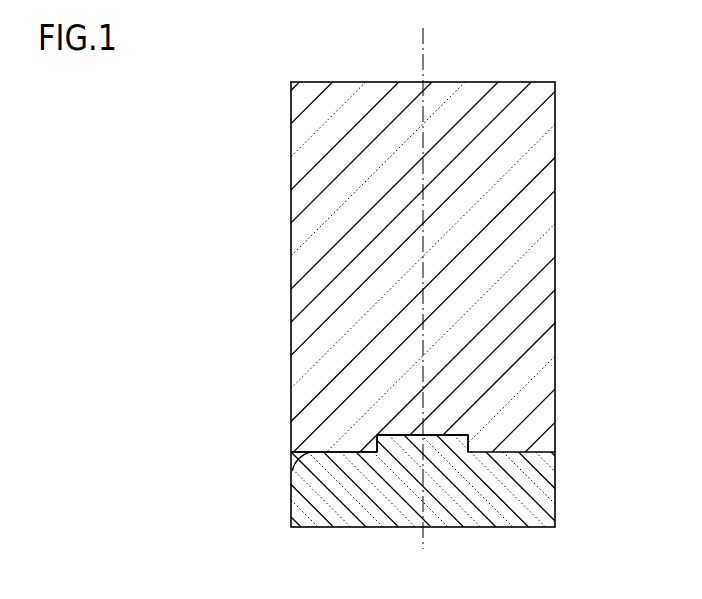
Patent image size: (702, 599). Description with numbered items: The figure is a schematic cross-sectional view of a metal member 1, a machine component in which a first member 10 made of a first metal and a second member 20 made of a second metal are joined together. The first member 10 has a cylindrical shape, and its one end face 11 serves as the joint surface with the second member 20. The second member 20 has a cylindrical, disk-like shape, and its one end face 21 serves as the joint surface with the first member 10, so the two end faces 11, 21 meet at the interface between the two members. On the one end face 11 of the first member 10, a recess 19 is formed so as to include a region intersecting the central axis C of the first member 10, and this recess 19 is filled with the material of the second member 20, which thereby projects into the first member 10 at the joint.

The metal member 1 is at (578, 66).
The first member 10 is at (543, 269).
The one end face 11 is at (291, 465).
The recess 19 is at (433, 445).
The second member 20 is at (538, 488).
The one end face 21 is at (522, 453).
The central axis C is at (426, 48).